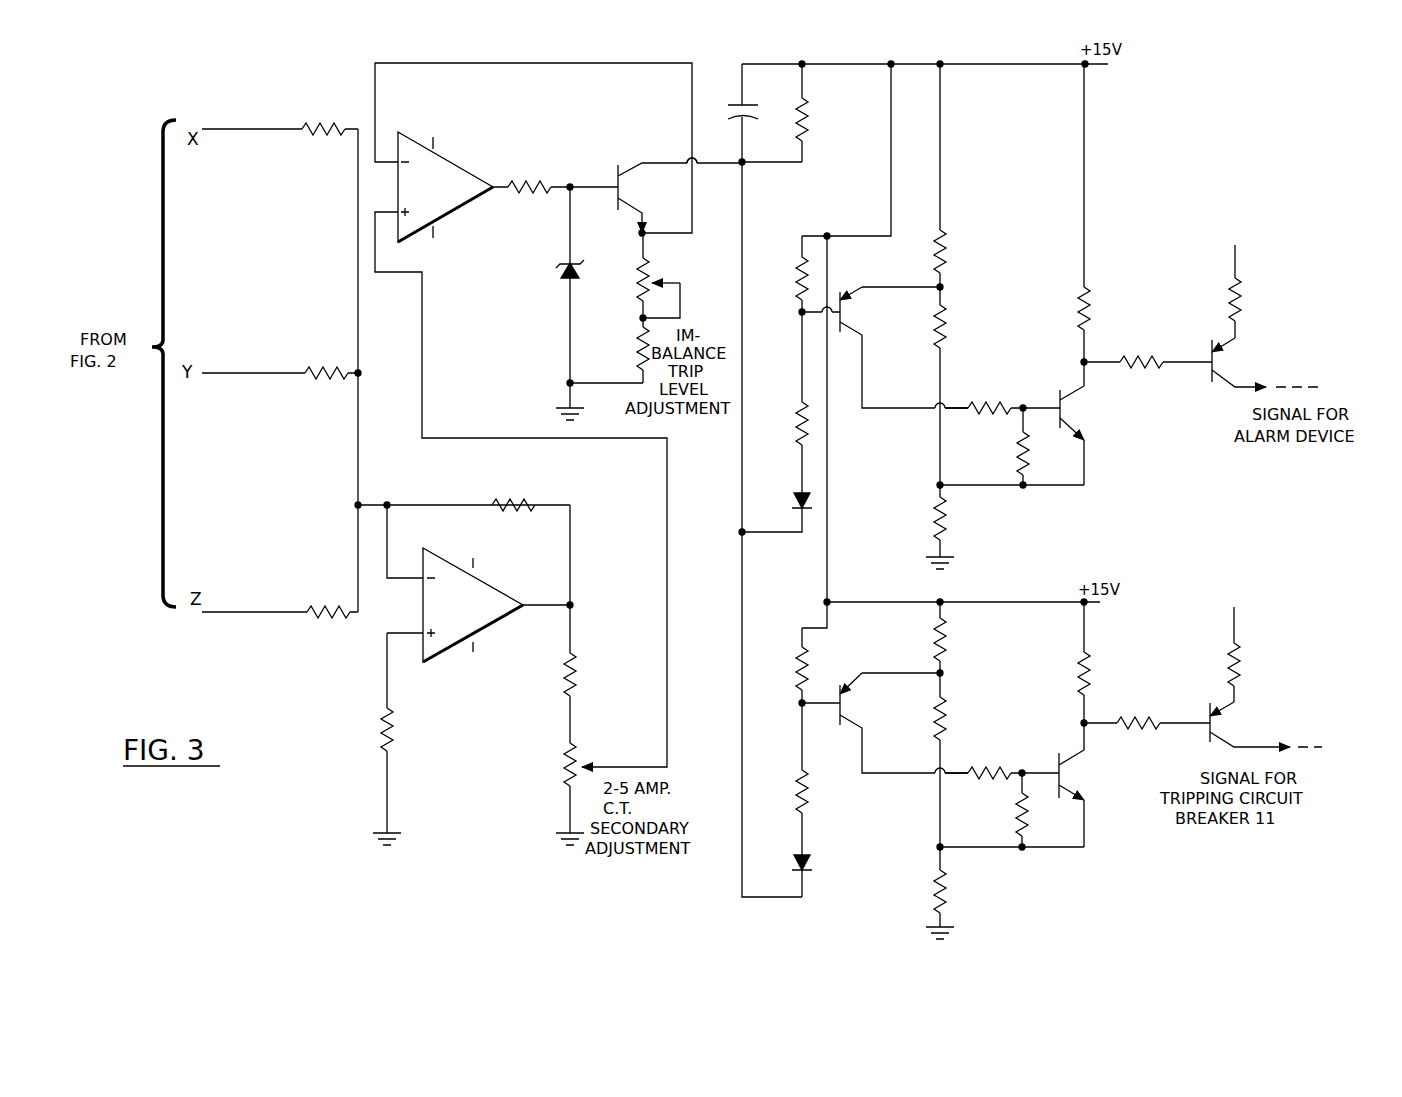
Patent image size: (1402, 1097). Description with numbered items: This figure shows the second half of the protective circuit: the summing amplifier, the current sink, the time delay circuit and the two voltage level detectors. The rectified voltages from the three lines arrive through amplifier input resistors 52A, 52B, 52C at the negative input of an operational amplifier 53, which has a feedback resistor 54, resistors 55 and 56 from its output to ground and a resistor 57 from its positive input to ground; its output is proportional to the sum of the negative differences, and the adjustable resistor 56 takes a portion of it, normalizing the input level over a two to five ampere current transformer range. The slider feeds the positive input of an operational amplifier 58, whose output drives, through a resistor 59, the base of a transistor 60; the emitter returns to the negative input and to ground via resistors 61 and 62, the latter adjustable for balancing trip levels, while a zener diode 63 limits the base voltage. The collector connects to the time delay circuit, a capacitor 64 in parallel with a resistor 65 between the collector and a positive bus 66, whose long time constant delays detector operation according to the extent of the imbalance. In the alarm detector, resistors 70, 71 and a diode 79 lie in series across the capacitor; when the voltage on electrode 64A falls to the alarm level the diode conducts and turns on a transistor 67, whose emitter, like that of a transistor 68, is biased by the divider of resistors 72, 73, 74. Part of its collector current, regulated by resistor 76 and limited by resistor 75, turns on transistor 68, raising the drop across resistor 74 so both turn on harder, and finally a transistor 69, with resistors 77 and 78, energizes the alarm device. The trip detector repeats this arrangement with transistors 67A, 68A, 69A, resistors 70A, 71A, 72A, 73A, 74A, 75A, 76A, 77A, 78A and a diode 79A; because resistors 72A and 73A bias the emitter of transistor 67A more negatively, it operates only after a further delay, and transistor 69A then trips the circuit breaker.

The amplifier input resistor 52A is at (316, 135).
The amplifier input resistor 52B is at (316, 378).
The amplifier input resistor 52C is at (322, 607).
The operational amplifier 53 is at (485, 593).
The feedback resistor 54 is at (518, 497).
The resistor 55 is at (578, 681).
The adjustable resistor 56 is at (560, 771).
The resistor 57 is at (395, 729).
The operational amplifier 58 is at (440, 163).
The resistor 59 is at (522, 196).
The transistor 60 is at (612, 176).
The resistor 61 is at (637, 286).
The resistor 62 is at (637, 344).
The zener diode 63 is at (559, 268).
The capacitor 64 is at (735, 101).
The electrode 64A is at (736, 119).
The resistor 65 is at (813, 116).
The positive bus 66 is at (983, 64).
The transistor 67 is at (855, 328).
The transistor 68 is at (1076, 419).
The transistor 69 is at (1223, 386).
The resistor 70 is at (796, 284).
The resistor 71 is at (796, 420).
The resistor 72 is at (950, 257).
The resistor 73 is at (950, 331).
The resistor 74 is at (950, 526).
The resistor 75 is at (993, 404).
The resistor 76 is at (1011, 456).
The resistor 77 is at (1090, 306).
The resistor 78 is at (1149, 370).
The diode 79 is at (796, 500).
The transistor 67A is at (858, 708).
The transistor 68A is at (1072, 773).
The transistor 69A is at (1225, 726).
The resistor 70A is at (798, 686).
The resistor 71A is at (815, 801).
The resistor 72A is at (952, 641).
The resistor 73A is at (946, 713).
The resistor 74A is at (946, 893).
The resistor 75A is at (975, 770).
The resistor 76A is at (1011, 804).
The resistor 77A is at (1090, 661).
The resistor 78A is at (1141, 718).
The diode 79A is at (812, 866).